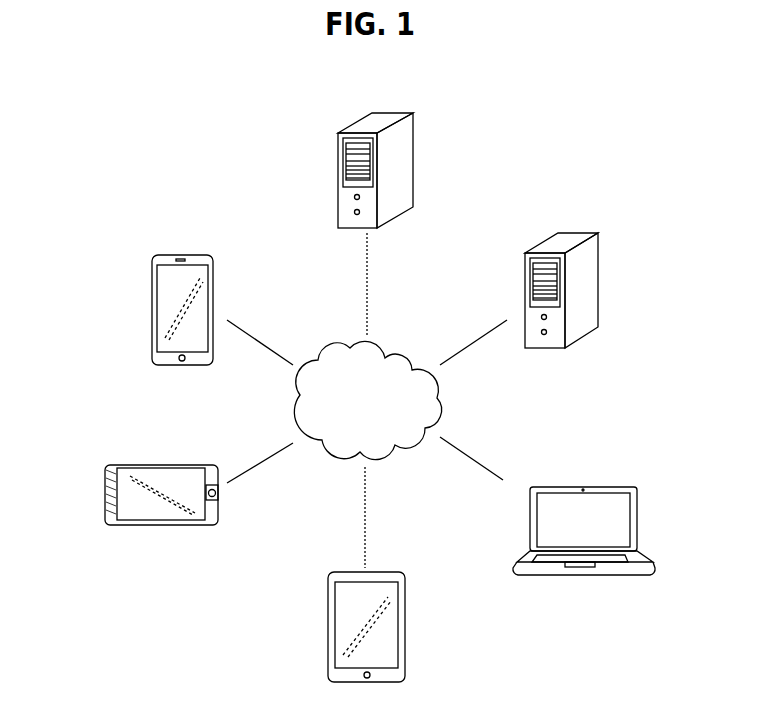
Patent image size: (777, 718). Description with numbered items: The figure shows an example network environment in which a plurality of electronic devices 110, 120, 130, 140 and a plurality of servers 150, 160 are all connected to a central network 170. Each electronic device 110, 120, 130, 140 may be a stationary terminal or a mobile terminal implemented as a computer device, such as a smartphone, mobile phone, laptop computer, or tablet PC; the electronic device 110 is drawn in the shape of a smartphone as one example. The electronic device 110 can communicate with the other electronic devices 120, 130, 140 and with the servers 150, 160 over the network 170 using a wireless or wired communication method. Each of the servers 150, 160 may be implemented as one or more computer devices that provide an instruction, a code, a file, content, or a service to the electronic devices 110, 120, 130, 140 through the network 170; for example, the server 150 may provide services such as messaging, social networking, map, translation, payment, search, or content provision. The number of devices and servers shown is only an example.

The electronic device 110 is at (152, 310).
The electronic device 120 is at (105, 493).
The electronic device 130 is at (405, 623).
The electronic device 140 is at (637, 522).
The server 150 is at (600, 280).
The server 160 is at (413, 160).
The network 170 is at (387, 358).